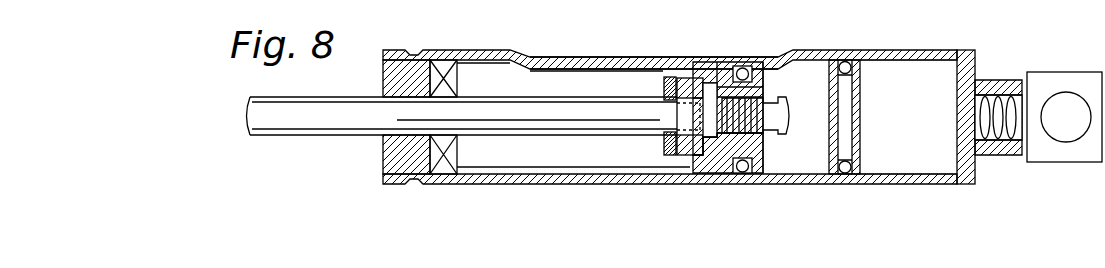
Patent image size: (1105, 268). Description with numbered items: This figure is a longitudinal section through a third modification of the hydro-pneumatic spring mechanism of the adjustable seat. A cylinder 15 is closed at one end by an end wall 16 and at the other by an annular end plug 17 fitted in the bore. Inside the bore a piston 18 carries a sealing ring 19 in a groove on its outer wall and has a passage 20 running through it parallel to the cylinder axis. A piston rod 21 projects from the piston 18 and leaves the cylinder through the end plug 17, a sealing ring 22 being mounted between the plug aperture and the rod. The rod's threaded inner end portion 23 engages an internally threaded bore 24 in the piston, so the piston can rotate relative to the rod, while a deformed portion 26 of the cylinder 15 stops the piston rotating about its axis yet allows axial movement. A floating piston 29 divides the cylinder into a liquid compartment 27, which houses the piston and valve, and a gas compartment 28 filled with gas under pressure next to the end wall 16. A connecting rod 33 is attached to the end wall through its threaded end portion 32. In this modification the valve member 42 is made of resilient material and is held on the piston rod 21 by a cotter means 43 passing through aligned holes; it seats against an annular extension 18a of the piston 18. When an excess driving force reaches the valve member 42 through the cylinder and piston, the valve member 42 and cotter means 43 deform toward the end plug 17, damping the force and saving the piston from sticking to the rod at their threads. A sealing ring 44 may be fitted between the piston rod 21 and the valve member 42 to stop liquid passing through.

The cylinder 15 is at (500, 180).
The end wall 16 is at (970, 160).
The annular end plug 17 is at (388, 163).
The piston 18 is at (716, 162).
The annular extension 18a is at (706, 85).
The sealing ring 19 is at (745, 173).
The passage 20 is at (765, 85).
The piston rod 21 is at (302, 130).
The sealing ring 22 is at (443, 165).
The inner end portion 23 is at (766, 130).
The internally threaded bore 24 is at (740, 68).
The deformed portion 26 is at (552, 58).
The liquid compartment 27 is at (570, 162).
The gas compartment 28 is at (915, 162).
The floating piston 29 is at (836, 170).
The threaded end portion 32 is at (998, 82).
The connecting rod 33 is at (1073, 80).
The valve member 42 is at (680, 163).
The cotter means 43 is at (680, 75).
The sealing ring 44 is at (724, 172).